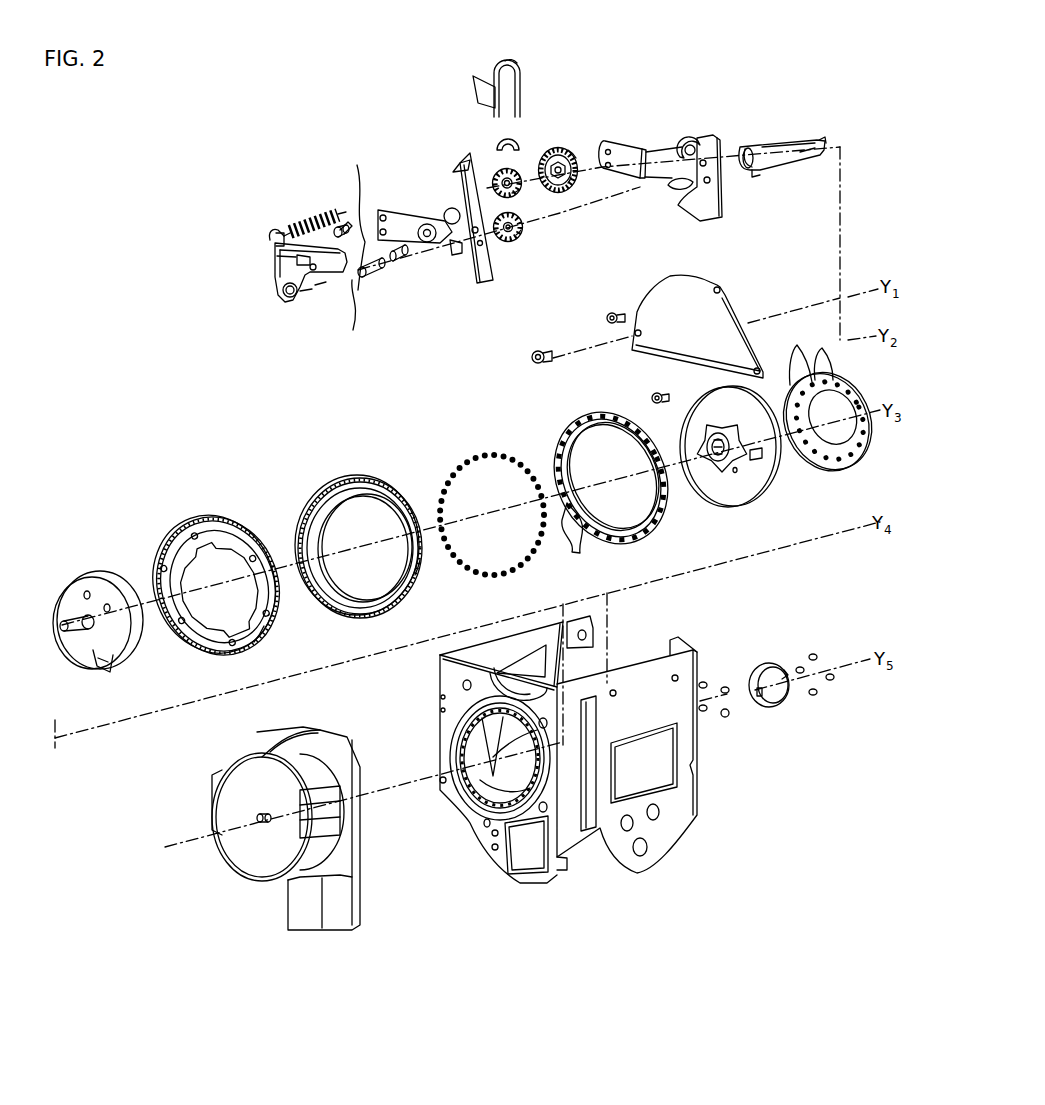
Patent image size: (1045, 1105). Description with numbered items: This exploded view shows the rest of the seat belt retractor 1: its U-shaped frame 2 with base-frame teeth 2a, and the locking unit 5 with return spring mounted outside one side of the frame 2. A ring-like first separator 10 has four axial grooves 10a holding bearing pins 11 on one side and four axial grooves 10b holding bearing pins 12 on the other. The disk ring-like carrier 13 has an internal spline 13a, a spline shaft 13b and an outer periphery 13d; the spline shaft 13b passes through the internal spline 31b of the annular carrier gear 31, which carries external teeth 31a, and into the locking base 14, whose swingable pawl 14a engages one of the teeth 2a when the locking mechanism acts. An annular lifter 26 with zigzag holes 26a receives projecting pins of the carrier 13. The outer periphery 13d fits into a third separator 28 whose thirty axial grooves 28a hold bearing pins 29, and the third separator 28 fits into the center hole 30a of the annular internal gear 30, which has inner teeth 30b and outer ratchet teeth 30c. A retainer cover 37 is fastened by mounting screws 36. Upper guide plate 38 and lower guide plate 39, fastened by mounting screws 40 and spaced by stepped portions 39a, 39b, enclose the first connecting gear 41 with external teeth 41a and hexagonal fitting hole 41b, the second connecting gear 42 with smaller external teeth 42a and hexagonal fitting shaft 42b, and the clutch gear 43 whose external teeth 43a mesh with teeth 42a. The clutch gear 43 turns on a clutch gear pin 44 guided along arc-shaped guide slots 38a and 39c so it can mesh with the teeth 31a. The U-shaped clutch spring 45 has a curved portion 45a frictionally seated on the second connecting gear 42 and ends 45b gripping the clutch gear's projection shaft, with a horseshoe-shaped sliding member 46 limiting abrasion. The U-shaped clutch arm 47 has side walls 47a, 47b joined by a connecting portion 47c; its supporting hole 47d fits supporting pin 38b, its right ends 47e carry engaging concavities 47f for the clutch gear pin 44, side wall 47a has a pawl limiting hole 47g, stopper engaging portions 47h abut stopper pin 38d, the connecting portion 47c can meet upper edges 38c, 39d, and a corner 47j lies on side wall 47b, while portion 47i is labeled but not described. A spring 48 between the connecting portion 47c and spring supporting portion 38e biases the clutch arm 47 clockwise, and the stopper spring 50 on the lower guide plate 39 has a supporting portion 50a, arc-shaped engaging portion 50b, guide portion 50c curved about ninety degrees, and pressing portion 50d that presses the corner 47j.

The seat belt retractor 1 is at (445, 872).
The frame 2 is at (685, 835).
The teeth of base frame 2a is at (500, 758).
The locking unit with return spring 5 is at (243, 884).
The first separator 10 is at (780, 706).
The axial grooves 10a is at (790, 685).
The axial grooves 10b is at (760, 698).
The bearing pins 11 is at (810, 648).
The bearing pins 12 is at (725, 720).
The carrier 13 is at (728, 512).
The internal spline 13a is at (714, 464).
The spline shaft 13b is at (748, 457).
The outer periphery of carrier 13d is at (770, 456).
The locking base 14 is at (98, 566).
The pawl 14a is at (98, 670).
The lifter 26 is at (860, 458).
The holes of lifter 26a is at (807, 353).
The third separator 28 is at (558, 428).
The axial grooves 28a is at (574, 542).
The bearing pins 29 is at (442, 476).
The internal gear 30 is at (333, 478).
The center hole 30a is at (312, 533).
The annular inner teeth 30b is at (338, 563).
The annular ratchet teeth 30c is at (417, 572).
The carrier gear 31 is at (178, 522).
The external teeth 31a is at (272, 627).
The internal spline 31b is at (220, 590).
The mounting screws 36 is at (603, 320).
The retainer cover 37 is at (632, 350).
The upper guide plate 38 is at (450, 168).
The arc-shaped guide slot 38a is at (485, 280).
The supporting pin 38b is at (427, 242).
The upper edge 38c is at (420, 212).
The stopper pin 38d is at (382, 217).
The spring supporting portion 38e is at (457, 172).
The lower guide plate 39 is at (637, 140).
The stepped portion 39a is at (688, 200).
The stepped portion 39b is at (652, 184).
The arc-shaped guide slot 39c is at (700, 138).
The upper edge 39d is at (646, 146).
The mounting screws 40 is at (334, 233).
The first connecting gear 41 is at (570, 147).
The external teeth 41a is at (575, 150).
The fitting hole 41b is at (570, 185).
The second connecting gear 42 is at (495, 172).
The external teeth 42a is at (517, 193).
The fitting shaft 42b is at (520, 173).
The clutch gear 43 is at (517, 247).
The external teeth 43a is at (520, 230).
The clutch gear pin 44 is at (360, 283).
The clutch spring 45 is at (492, 62).
The curved portion 45a is at (512, 62).
The pair of ends 45b is at (472, 78).
The sliding member 46 is at (494, 140).
The clutch arm 47 is at (278, 283).
The side wall 47a is at (275, 262).
The side wall 47b is at (347, 222).
The connecting portion 47c is at (272, 236).
The supporting hole 47d is at (270, 244).
The right ends 47e is at (356, 266).
The engaging concavities 47f is at (338, 278).
The pawl limiting hole 47g is at (290, 298).
The stopper engaging portions 47h is at (310, 268).
The lever portion 47i is at (306, 290).
The corner 47j is at (320, 286).
The spring 48 is at (290, 228).
The stopper spring 50 is at (778, 138).
The supporting portion 50a is at (745, 148).
The engaging portion 50b is at (755, 172).
The guide portion 50c is at (812, 168).
The pressing portion 50d is at (820, 140).